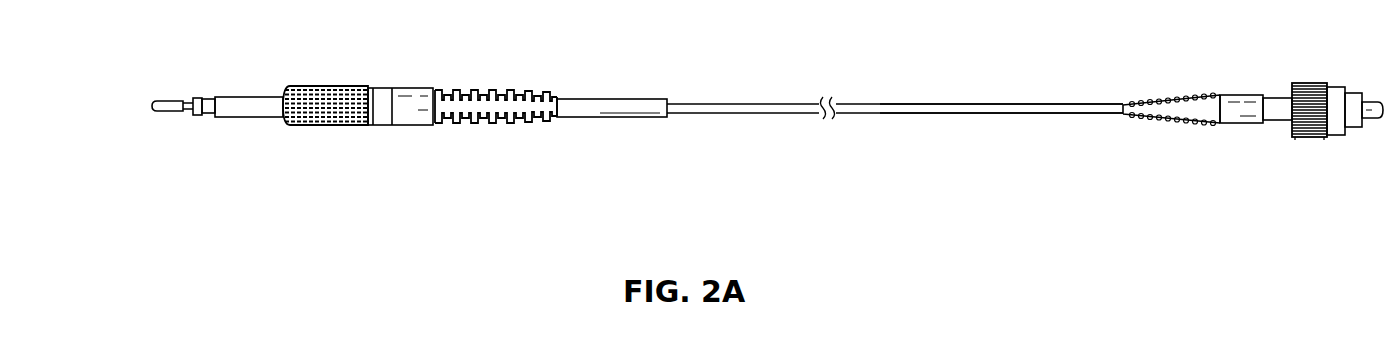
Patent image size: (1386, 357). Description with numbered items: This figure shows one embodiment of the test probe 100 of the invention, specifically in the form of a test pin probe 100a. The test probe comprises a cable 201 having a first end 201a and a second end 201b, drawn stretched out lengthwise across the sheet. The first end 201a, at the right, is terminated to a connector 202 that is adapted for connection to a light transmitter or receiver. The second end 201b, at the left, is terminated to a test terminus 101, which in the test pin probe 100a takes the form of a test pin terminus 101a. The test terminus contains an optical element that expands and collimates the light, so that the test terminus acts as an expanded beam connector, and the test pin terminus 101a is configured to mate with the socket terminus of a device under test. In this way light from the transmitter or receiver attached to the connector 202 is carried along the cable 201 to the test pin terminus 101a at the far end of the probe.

The test probe 100 is at (1092, 156).
The test pin probe 100a is at (945, 140).
The test terminus 101 is at (172, 113).
The test pin terminus 101a is at (182, 141).
The cable 201 is at (925, 104).
The first end 201a is at (1290, 137).
The second end 201b is at (560, 118).
The connector 202 is at (1327, 137).